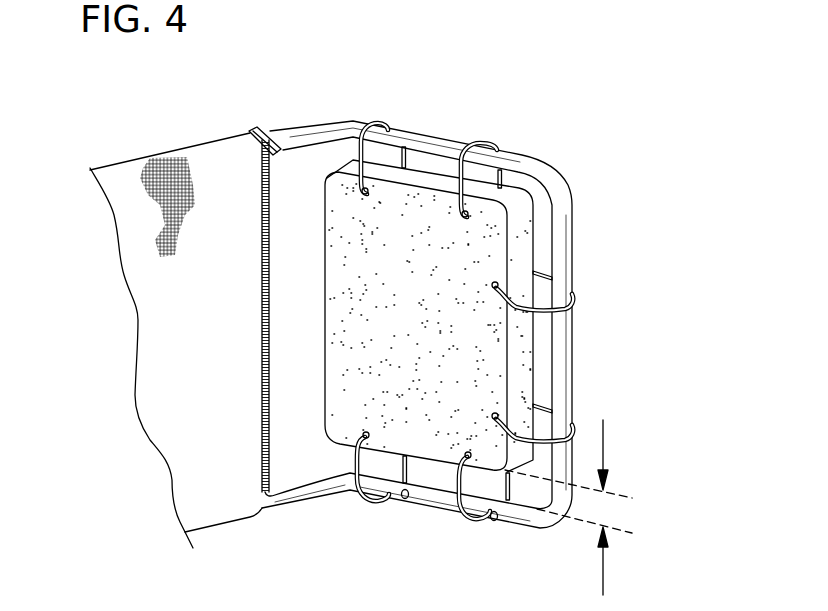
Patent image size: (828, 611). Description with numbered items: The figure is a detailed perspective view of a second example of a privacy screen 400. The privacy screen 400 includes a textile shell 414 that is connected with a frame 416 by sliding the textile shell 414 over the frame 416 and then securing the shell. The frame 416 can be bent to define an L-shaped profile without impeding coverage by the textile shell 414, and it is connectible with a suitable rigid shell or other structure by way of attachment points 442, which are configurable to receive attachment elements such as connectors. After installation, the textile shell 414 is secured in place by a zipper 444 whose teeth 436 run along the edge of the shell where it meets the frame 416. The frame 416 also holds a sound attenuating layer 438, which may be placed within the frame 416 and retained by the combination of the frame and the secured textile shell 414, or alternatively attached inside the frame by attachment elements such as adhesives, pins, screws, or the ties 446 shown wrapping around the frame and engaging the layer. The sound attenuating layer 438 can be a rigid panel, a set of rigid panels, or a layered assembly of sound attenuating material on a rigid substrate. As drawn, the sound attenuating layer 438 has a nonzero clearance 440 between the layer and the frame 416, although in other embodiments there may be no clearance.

The privacy screen 400 is at (549, 119).
The textile shell 414 is at (152, 170).
The frame 416 is at (572, 197).
The teeth 436 is at (265, 388).
The sound attenuating layer 438 is at (431, 333).
The clearance 440 is at (568, 507).
The attachment points 442 is at (403, 500).
The zipper 444 is at (258, 130).
The ties 446 is at (382, 122).